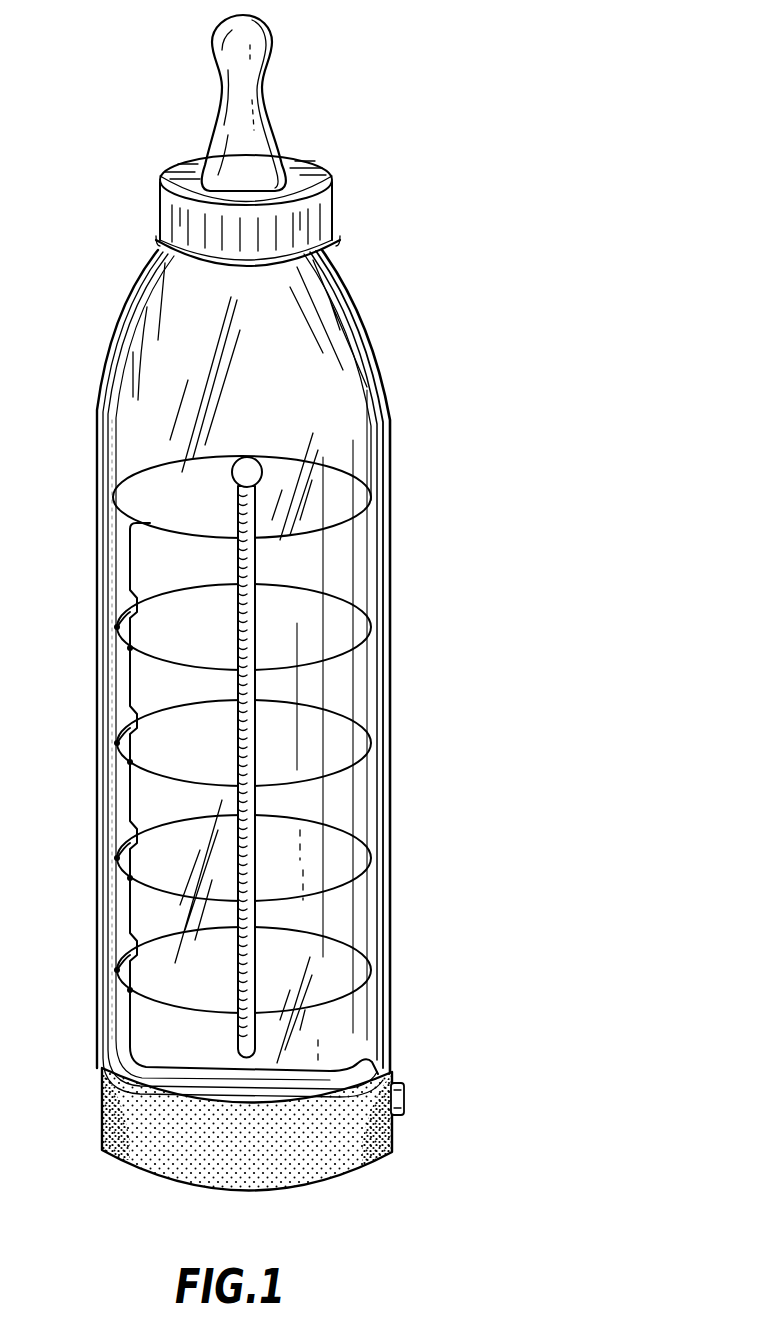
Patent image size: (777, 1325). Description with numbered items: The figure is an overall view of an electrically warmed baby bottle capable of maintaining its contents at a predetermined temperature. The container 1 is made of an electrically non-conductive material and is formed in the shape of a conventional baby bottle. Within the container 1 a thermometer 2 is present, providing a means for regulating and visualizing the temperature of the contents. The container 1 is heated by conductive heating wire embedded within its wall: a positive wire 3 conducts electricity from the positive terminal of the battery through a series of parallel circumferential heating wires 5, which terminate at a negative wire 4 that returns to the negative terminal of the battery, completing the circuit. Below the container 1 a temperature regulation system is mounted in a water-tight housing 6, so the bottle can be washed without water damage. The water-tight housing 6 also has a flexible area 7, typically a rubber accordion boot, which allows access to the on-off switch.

The container 1 is at (128, 328).
The thermometer 2 is at (258, 458).
The positive wire 3 is at (113, 545).
The negative wire 4 is at (130, 683).
The heating wires 5 is at (338, 770).
The water-tight housing 6 is at (102, 1101).
The flexible area 7 is at (403, 1092).